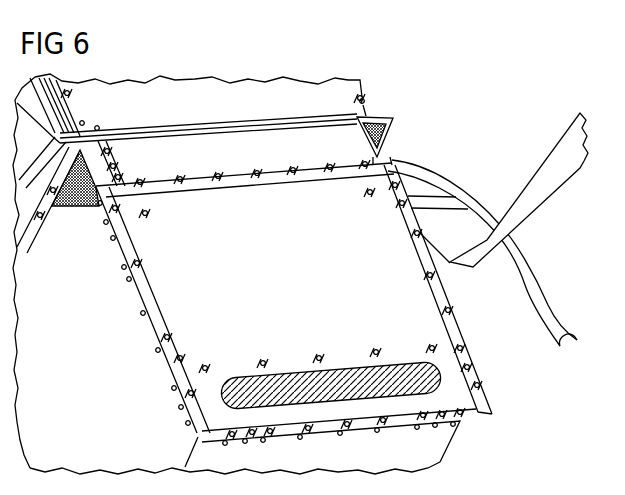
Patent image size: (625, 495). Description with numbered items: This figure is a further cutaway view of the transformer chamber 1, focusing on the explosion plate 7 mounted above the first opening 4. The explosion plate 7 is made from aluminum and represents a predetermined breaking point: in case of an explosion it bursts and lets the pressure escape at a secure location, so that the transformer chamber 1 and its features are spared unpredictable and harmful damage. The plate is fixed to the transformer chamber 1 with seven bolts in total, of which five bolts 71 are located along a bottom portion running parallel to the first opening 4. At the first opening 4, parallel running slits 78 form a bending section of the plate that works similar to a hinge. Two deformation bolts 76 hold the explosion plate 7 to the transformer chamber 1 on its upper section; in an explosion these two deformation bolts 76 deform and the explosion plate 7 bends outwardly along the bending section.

The transformer chamber 1 is at (504, 355).
The first opening 4 is at (295, 381).
The explosion plate 7 is at (266, 178).
The bolts 71 is at (204, 365).
The deformation bolts 76 is at (148, 214).
The slits 78 is at (236, 377).